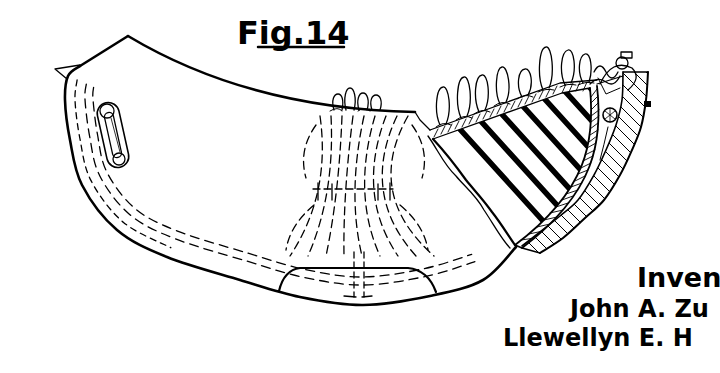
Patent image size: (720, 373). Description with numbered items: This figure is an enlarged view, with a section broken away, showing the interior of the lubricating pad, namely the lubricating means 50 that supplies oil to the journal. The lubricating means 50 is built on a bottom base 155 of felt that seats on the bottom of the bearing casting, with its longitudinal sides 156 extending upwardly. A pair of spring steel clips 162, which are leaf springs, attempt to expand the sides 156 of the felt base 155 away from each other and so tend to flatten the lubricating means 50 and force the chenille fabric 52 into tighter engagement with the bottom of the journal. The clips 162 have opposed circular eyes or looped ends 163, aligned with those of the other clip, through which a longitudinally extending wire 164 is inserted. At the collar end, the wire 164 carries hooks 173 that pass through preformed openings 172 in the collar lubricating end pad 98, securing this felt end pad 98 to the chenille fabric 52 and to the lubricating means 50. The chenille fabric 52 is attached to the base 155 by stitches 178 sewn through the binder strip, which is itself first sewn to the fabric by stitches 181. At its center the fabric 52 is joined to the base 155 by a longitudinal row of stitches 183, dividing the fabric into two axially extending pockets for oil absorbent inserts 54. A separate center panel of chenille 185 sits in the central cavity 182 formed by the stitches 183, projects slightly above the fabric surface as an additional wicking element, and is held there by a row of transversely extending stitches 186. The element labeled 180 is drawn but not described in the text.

The collar lubricating end pad 98 is at (135, 66).
The longitudinal sides 156 is at (65, 68).
The preformed openings 172 is at (111, 103).
The hooks 173 is at (118, 138).
The center panel of chenille 185 is at (348, 88).
The central cavity 182 is at (388, 126).
The transversely extending stitches 186 is at (328, 205).
The stitches 183 is at (345, 296).
The lubricating means 50 is at (500, 58).
The chenille fabric 52 is at (458, 88).
The bottom base 155 is at (540, 247).
The oil absorbent inserts 54 is at (600, 197).
The spring steel clips 162 is at (638, 157).
The wire 164 is at (640, 112).
The looped ends 163 is at (618, 113).
The stitches 178 is at (651, 100).
The hook 180 is at (614, 64).
The stitches 181 is at (608, 54).